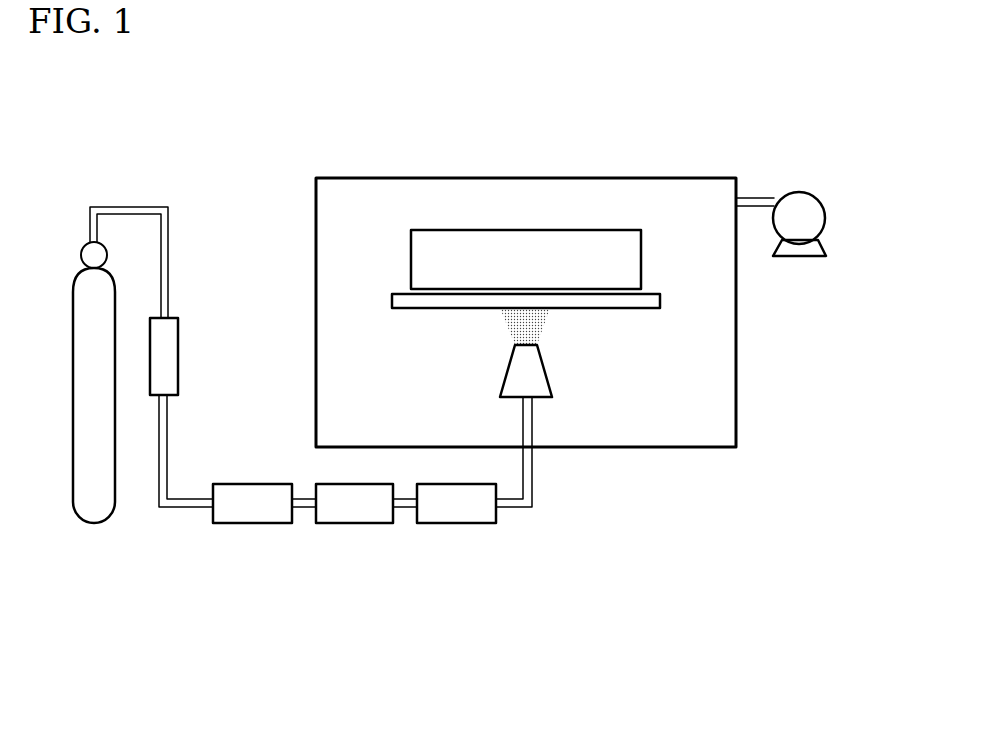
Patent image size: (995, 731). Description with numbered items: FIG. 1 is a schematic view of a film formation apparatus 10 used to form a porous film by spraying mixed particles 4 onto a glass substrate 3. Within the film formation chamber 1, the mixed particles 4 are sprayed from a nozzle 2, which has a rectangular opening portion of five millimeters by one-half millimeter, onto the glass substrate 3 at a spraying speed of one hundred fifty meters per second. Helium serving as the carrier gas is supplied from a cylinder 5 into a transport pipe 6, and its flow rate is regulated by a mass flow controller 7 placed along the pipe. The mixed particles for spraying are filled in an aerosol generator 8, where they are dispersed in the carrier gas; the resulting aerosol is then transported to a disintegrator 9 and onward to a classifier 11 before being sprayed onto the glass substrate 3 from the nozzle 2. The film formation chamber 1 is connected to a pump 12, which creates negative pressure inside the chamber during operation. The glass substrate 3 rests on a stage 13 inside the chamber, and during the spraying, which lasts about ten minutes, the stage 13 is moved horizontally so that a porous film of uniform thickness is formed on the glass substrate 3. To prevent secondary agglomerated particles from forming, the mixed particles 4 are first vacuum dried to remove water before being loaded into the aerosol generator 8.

The film formation chamber 1 is at (376, 180).
The nozzle 2 is at (540, 380).
The glass substrate 3 is at (660, 300).
The mixed particles 4 is at (515, 325).
The cylinder 5 is at (75, 340).
The transport pipe 6 is at (137, 207).
The mass flow controller 7 is at (168, 350).
The aerosol generator 8 is at (255, 517).
The disintegrator 9 is at (355, 515).
The film formation apparatus 10 is at (645, 137).
The classifier 11 is at (456, 512).
The pump 12 is at (800, 205).
The stage 13 is at (510, 240).